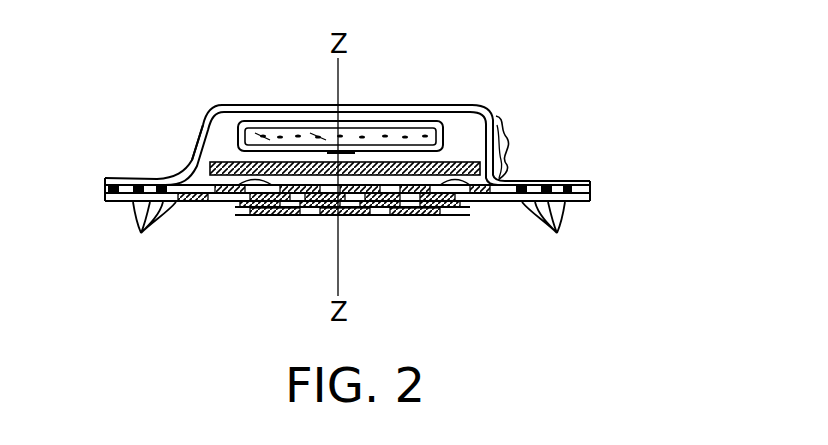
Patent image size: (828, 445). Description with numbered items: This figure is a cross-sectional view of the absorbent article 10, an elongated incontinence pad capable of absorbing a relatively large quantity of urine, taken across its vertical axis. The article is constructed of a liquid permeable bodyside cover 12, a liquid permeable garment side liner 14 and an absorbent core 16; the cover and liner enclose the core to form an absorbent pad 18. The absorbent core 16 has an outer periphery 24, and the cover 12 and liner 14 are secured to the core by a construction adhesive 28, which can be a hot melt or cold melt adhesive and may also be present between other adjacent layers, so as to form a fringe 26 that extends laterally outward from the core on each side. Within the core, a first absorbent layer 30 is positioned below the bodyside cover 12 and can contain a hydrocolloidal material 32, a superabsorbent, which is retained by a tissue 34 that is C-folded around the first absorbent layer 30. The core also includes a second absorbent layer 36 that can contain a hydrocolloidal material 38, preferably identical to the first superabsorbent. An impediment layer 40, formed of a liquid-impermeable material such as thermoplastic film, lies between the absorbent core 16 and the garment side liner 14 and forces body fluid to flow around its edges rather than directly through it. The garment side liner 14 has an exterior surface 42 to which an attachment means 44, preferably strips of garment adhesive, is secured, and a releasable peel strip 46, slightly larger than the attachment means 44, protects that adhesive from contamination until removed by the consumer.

The absorbent article 10 is at (594, 82).
The bodyside cover 12 is at (462, 100).
The garment side liner 14 is at (503, 203).
The absorbent core 16 is at (513, 140).
The absorbent pad 18 is at (184, 84).
The outer periphery 24 is at (200, 170).
The fringe 26 is at (145, 178).
The construction adhesive 28 is at (144, 231).
The first absorbent layer 30 is at (378, 125).
The hydrocolloidal material 32 is at (320, 135).
The tissue 34 is at (425, 110).
The second absorbent layer 36 is at (475, 200).
The hydrocolloidal material 38 is at (416, 201).
The impediment layer 40 is at (236, 203).
The exterior surface 42 is at (188, 203).
The attachment means 44 is at (365, 210).
The peel strip 46 is at (282, 215).